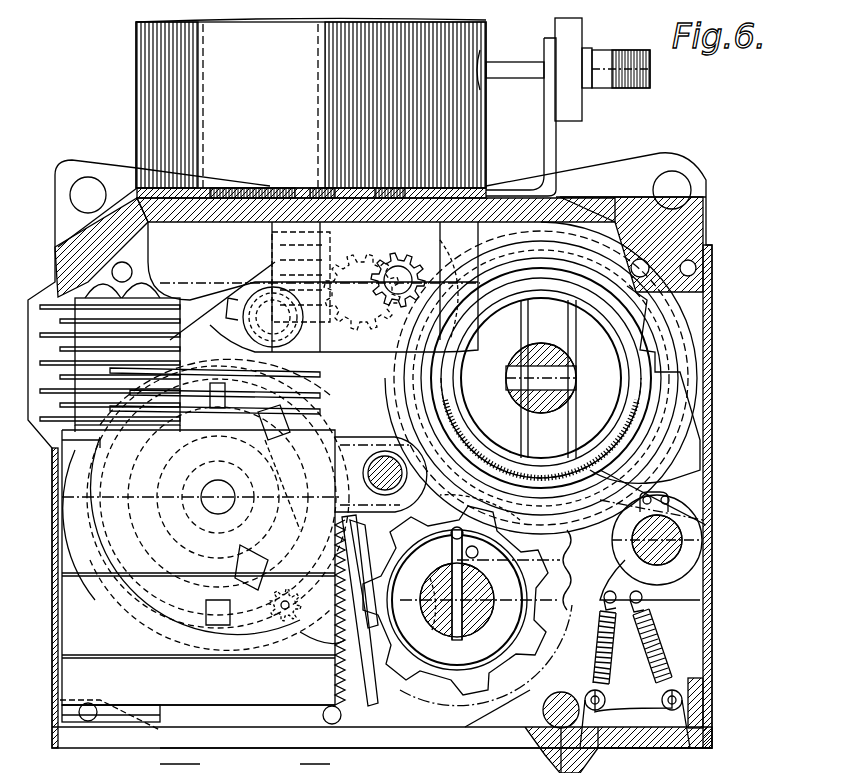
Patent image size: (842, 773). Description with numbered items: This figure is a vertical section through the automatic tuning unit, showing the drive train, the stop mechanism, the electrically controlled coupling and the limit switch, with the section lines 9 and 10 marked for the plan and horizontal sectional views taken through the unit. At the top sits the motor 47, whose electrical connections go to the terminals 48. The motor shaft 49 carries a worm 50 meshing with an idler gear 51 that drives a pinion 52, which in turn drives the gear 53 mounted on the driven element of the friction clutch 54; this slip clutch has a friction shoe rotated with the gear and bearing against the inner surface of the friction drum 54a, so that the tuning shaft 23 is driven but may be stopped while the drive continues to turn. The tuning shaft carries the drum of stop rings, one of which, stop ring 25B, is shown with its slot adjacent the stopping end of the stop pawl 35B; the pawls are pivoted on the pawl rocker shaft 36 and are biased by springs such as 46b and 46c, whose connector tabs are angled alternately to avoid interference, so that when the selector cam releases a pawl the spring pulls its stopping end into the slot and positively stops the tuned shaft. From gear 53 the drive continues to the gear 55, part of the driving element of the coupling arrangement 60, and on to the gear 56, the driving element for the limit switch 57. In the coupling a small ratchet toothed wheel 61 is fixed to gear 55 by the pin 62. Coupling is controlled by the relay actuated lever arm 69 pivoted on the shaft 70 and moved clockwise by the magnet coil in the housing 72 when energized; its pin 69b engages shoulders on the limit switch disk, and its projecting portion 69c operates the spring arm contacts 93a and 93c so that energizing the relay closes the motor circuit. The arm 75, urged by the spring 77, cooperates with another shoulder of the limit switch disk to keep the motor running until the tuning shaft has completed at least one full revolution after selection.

The motor 47 is at (137, 47).
The terminals 48 is at (604, 90).
The motor shaft 49 is at (300, 192).
The worm 50 is at (256, 243).
The idler gear 51 is at (364, 330).
The pinion 52 is at (400, 254).
The gear 53 is at (484, 205).
The friction clutch 54 is at (462, 442).
The friction drum 54a is at (668, 340).
The tuning shaft 23 is at (541, 343).
The stop ring 25B is at (626, 348).
The stop pawl 35B is at (682, 462).
The pawl rocker shaft 36 is at (682, 534).
The spring 46b is at (612, 660).
The spring 46c is at (648, 606).
The gear 55 is at (330, 653).
The gear 56 is at (292, 643).
The limit switch 57 is at (152, 618).
The coupling arrangement 60 is at (461, 691).
The ratchet toothed wheel 61 is at (472, 625).
The pin 62 is at (468, 565).
The lever arm 69 is at (358, 657).
The pin 69b is at (292, 580).
The projecting portion 69c is at (285, 425).
The shaft 70 is at (380, 462).
The relay coil housing 72 is at (198, 703).
The arm 75 is at (197, 328).
The spring 77 is at (436, 760).
The spring arm contact 93a is at (322, 374).
The contact 93c is at (322, 410).
The section line 9— 9 is at (34, 310).
The section line 10— 10 is at (62, 497).